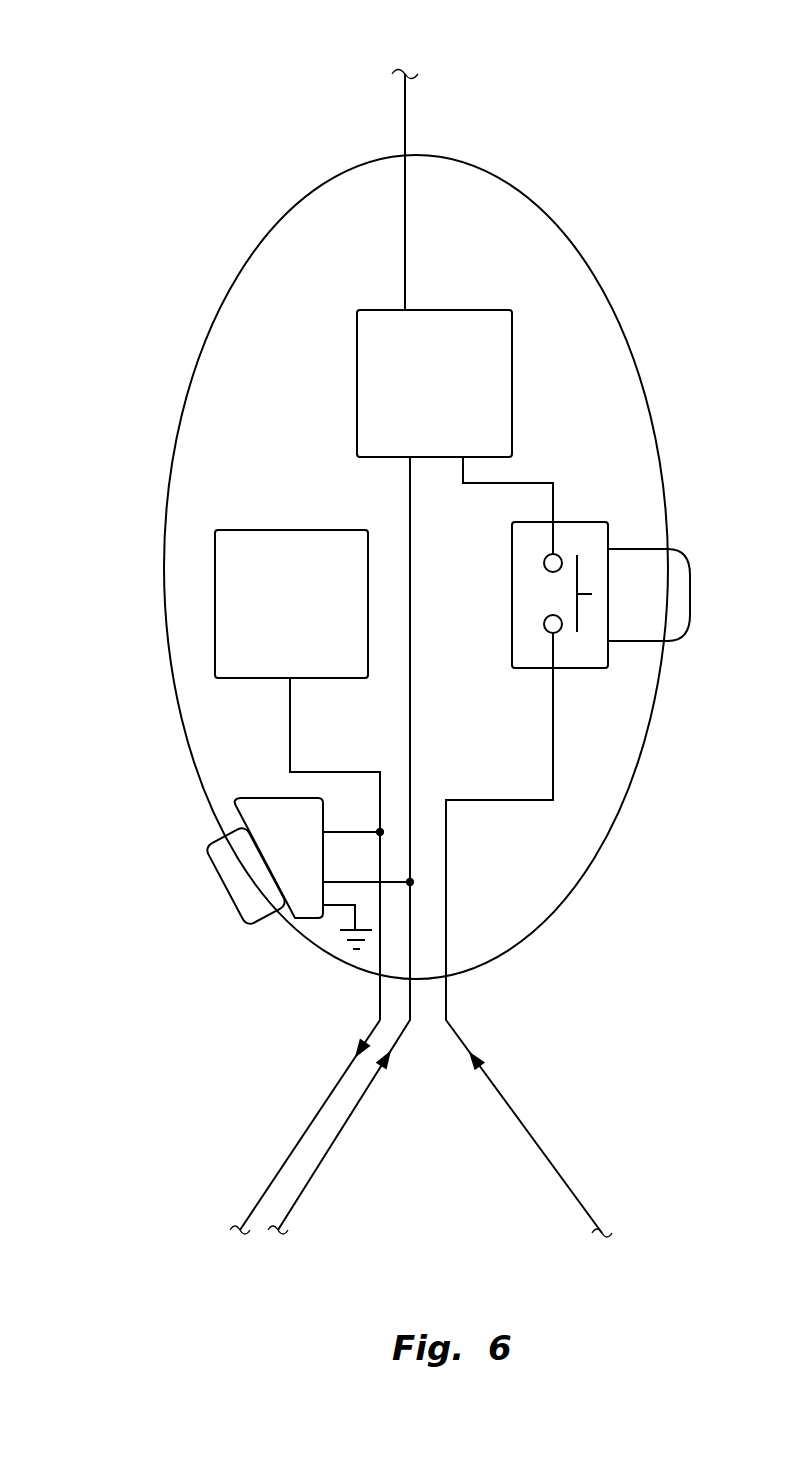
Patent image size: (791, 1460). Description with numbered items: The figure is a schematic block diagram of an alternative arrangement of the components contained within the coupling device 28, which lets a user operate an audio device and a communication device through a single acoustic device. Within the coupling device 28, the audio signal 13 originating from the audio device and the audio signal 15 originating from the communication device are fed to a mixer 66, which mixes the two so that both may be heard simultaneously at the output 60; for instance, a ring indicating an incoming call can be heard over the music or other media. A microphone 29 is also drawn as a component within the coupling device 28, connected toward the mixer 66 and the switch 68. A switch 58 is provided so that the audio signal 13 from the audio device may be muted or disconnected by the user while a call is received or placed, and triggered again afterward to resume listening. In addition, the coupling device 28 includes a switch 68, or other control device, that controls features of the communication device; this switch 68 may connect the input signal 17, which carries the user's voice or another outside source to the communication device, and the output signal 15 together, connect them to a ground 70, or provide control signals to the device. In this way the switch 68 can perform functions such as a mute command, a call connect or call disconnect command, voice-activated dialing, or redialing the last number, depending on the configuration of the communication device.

The coupling device 28 is at (136, 128).
The output 60 is at (405, 250).
The mixer 66 is at (434, 383).
The microphone 29 is at (297, 775).
The switch 58 is at (587, 522).
The switch 68 is at (309, 862).
The ground 70 is at (337, 920).
The voice signal 17 is at (318, 1107).
The audio signal 15 is at (328, 1152).
The audio signal 13 is at (548, 1153).